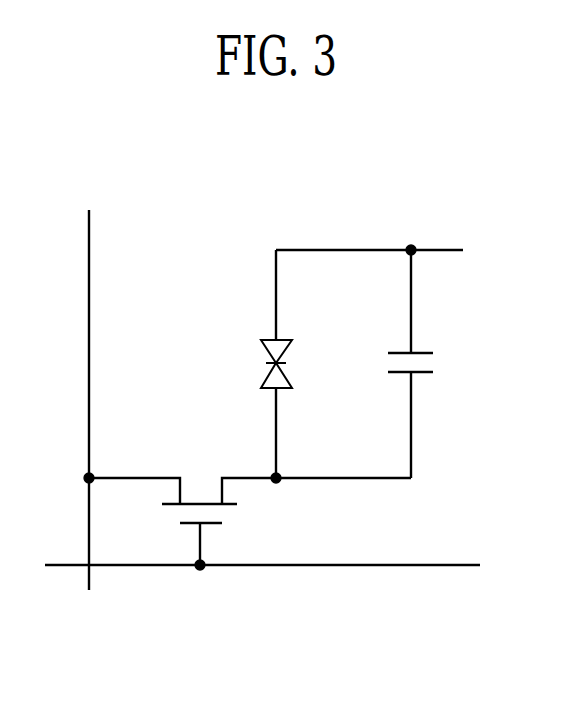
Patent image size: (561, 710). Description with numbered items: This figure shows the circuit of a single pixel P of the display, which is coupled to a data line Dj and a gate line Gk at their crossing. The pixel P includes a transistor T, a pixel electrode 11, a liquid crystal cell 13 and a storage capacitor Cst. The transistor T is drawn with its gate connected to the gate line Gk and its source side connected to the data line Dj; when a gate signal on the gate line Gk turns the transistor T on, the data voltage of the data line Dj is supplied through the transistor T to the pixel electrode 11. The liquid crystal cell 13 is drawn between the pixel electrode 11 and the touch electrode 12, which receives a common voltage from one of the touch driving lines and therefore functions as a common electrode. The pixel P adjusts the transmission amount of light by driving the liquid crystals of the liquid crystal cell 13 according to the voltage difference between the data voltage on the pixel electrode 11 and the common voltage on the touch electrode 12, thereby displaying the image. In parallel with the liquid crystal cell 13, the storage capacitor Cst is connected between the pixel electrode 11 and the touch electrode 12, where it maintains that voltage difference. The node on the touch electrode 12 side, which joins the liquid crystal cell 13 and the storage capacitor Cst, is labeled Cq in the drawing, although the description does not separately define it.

The pixel electrode 11 is at (270, 388).
The touch electrode 12 is at (270, 340).
The liquid crystal cell 13 is at (278, 363).
The pixel P is at (421, 235).
The transistor T is at (182, 521).
The storage capacitor Cst is at (374, 364).
The node Cq is at (388, 358).
The jth data line Dj is at (89, 255).
The kth gate line Gk is at (343, 566).